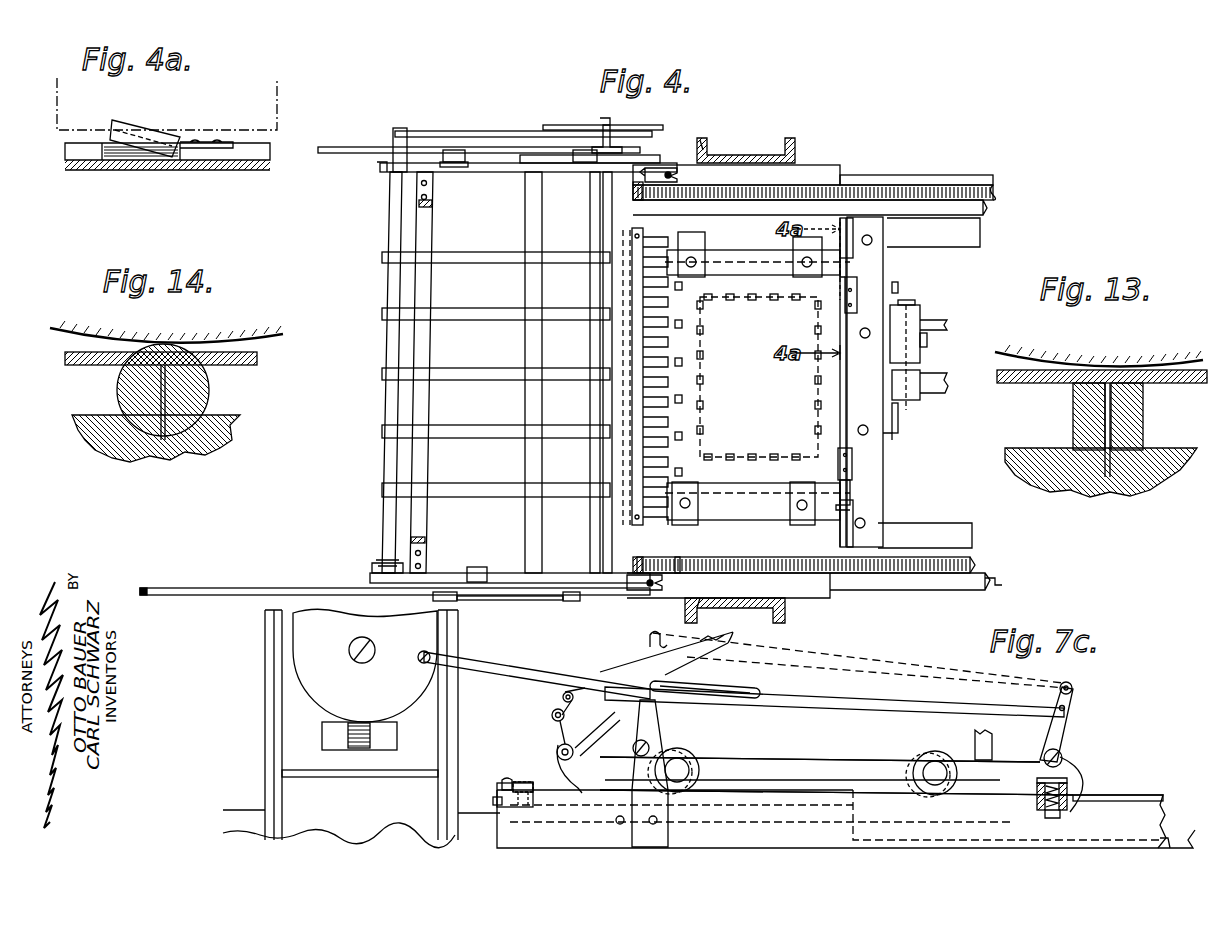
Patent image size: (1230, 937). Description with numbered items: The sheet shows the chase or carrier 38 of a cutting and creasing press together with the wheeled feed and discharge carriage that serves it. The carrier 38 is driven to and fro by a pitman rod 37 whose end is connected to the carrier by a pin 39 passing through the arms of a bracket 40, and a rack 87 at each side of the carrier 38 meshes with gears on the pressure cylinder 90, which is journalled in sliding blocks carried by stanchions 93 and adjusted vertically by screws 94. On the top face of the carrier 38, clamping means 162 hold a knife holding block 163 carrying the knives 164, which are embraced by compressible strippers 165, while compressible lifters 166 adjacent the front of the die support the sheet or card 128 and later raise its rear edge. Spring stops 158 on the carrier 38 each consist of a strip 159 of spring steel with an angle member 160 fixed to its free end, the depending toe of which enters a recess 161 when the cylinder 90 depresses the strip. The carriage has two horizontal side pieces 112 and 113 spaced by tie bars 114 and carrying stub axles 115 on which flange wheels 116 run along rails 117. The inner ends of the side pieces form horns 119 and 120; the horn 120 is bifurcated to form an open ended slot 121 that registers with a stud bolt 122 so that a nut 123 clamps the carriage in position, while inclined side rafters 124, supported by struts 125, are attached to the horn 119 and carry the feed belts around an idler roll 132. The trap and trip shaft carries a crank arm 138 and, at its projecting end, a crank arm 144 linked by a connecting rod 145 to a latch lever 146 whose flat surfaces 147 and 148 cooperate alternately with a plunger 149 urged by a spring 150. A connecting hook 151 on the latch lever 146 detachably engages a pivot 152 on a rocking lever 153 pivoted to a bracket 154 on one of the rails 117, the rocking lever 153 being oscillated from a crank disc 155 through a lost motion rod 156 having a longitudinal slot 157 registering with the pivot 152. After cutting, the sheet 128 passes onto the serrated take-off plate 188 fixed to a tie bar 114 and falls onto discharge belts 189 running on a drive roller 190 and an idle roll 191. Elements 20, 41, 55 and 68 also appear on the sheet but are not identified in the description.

In FIG. 4, the base frame 20 is at (995, 580).
In FIG. 7C, the base frame 20 is at (1162, 838).
In FIG. 4, the pitman rod 37 is at (940, 393).
In FIG. 4A, the chase, table, member or carrier 38 is at (270, 158).
In FIG. 4, the chase, table, member or carrier 38 is at (880, 268).
In FIG. 4, the pin 39 is at (912, 306).
In FIG. 4, the bracket 40 is at (892, 384).
In FIG. 4, the arm 41 is at (947, 325).
In FIG. 4, the stud 55 is at (928, 343).
In FIG. 4, the bar 68 is at (965, 243).
In FIG. 4, the rack 87 is at (930, 190).
In FIG. 14, the pressure cylinder 90 is at (282, 338).
In FIG. 13, the pressure cylinder 90 is at (1203, 360).
In FIG. 4, the stanchions 93 is at (797, 148).
In FIG. 7C, the stanchions 93 is at (265, 692).
In FIG. 7C, the screws 94 is at (348, 737).
In FIG. 4, the horizontal side piece 112 is at (473, 577).
In FIG. 4, the horizontal side piece 113 is at (490, 172).
In FIG. 7C, the horizontal side piece 113 is at (827, 770).
In FIG. 4, the transverse tie bars 114 is at (423, 520).
In FIG. 4, the trunnions or stub axles 115 is at (456, 167).
In FIG. 7C, the trunnions or stub axles 115 is at (680, 770).
In FIG. 4, the flange wheels 116 is at (453, 150).
In FIG. 7C, the flange wheels 116 is at (700, 775).
In FIG. 4, the rails 117 is at (356, 153).
In FIG. 7C, the rails 117 is at (1143, 795).
In FIG. 7C, the horn 119 is at (577, 753).
In FIG. 4, the horn 120 is at (676, 152).
In FIG. 7C, the horn 120 is at (493, 800).
In FIG. 4, the open ended slot 121 is at (680, 176).
In FIG. 4, the stud bolt 122 is at (702, 141).
In FIG. 7C, the stud bolt 122 is at (521, 782).
In FIG. 4, the nut 123 is at (678, 557).
In FIG. 7C, the nut 123 is at (505, 780).
In FIG. 7C, the inclined side rafters 124 is at (650, 645).
In FIG. 4, the struts 125 is at (420, 204).
In FIG. 7C, the struts 125 is at (992, 738).
In FIG. 4A, the material sheets or cards 128 is at (278, 84).
In FIG. 14, the material sheets or cards 128 is at (250, 366).
In FIG. 13, the material sheets or cards 128 is at (1188, 384).
In FIG. 4, the idler roll 132 is at (657, 197).
In FIG. 7C, the crank arm 138 is at (552, 715).
In FIG. 7C, the crank arm 144 is at (562, 697).
In FIG. 7C, the connecting rod 145 is at (915, 710).
In FIG. 4, the latch lever 146 is at (393, 135).
In FIG. 7C, the latch lever 146 is at (1060, 727).
In FIG. 7C, the flat surface 147 is at (1037, 778).
In FIG. 7C, the flat surface 148 is at (1075, 760).
In FIG. 7C, the plunger 149 is at (1062, 786).
In FIG. 7C, the spring 150 is at (1068, 808).
In FIG. 4, the connecting hook 151 is at (521, 131).
In FIG. 7C, the connecting hook 151 is at (830, 685).
In FIG. 7C, the pivot 152 is at (660, 672).
In FIG. 4, the rocking lever 153 is at (602, 120).
In FIG. 7C, the rocking lever 153 is at (645, 724).
In FIG. 7C, the bracket 154 is at (632, 833).
In FIG. 7C, the crank disc or wheel 155 is at (300, 635).
In FIG. 4, the lost motion rod 156 is at (641, 125).
In FIG. 7C, the lost motion rod 156 is at (528, 668).
In FIG. 7C, the longitudinal slot 157 is at (718, 693).
In FIG. 4A, the spring stops 158 is at (102, 127).
In FIG. 4, the spring stops 158 is at (845, 280).
In FIG. 4A, the strip of spring steel 159 is at (212, 140).
In FIG. 4, the strip of spring steel 159 is at (856, 304).
In FIG. 4A, the angle member 160 is at (140, 120).
In FIG. 4, the angle member 160 is at (857, 288).
In FIG. 4, the recess 161 is at (851, 249).
In FIG. 4, the clamping means 162 is at (793, 242).
In FIG. 14, the knife holding block 163 is at (105, 447).
In FIG. 13, the knife holding block 163 is at (1056, 440).
In FIG. 4, the knife holding block 163 is at (832, 418).
In FIG. 14, the knives 164 is at (118, 381).
In FIG. 13, the knives 164 is at (1085, 405).
In FIG. 4, the knives 164 is at (758, 300).
In FIG. 14, the strippers 165 is at (125, 395).
In FIG. 13, the strippers 165 is at (1135, 432).
In FIG. 4, the strippers 165 is at (703, 432).
In FIG. 4, the compressible lifters 166 is at (683, 362).
In FIG. 4, the take-off plate 188 is at (645, 350).
In FIG. 4, the discharge belts 189 is at (498, 263).
In FIG. 4, the drive roller 190 is at (385, 513).
In FIG. 4, the idle roll 191 is at (600, 466).